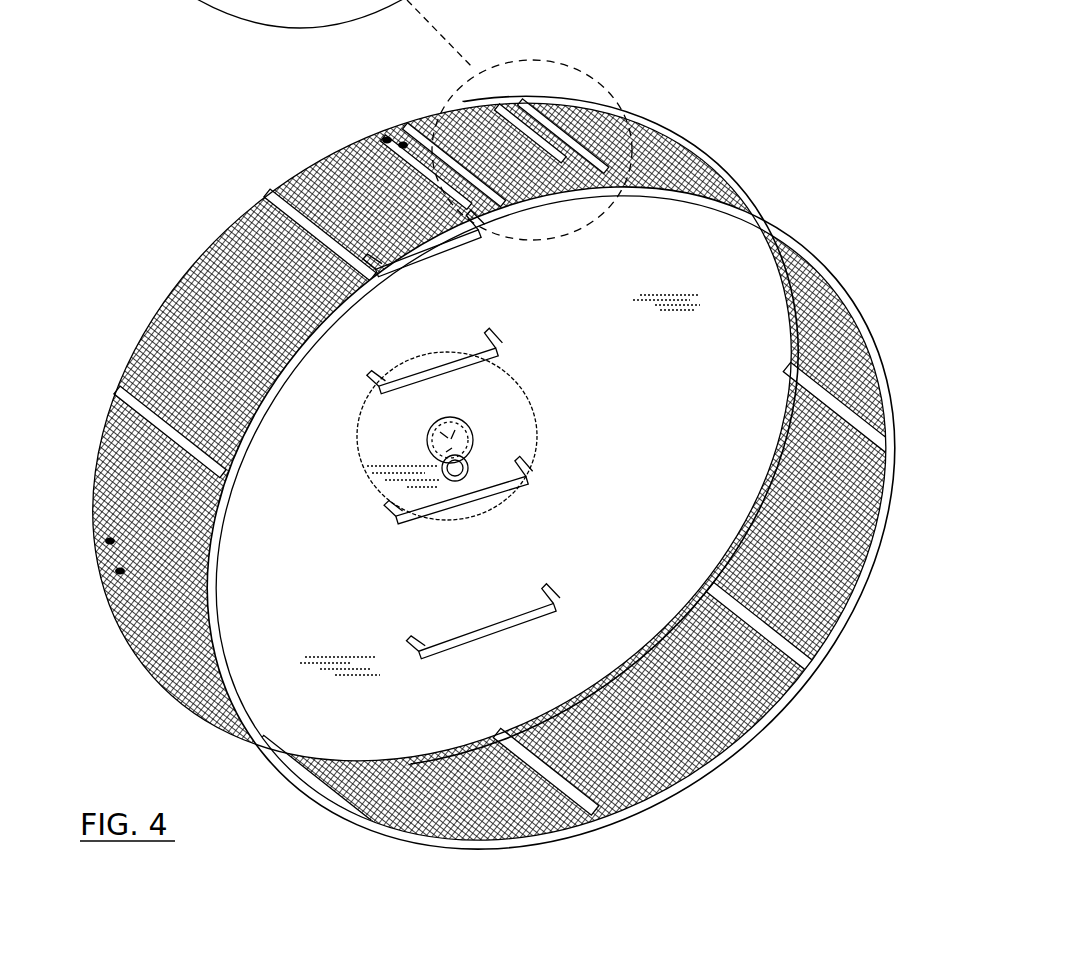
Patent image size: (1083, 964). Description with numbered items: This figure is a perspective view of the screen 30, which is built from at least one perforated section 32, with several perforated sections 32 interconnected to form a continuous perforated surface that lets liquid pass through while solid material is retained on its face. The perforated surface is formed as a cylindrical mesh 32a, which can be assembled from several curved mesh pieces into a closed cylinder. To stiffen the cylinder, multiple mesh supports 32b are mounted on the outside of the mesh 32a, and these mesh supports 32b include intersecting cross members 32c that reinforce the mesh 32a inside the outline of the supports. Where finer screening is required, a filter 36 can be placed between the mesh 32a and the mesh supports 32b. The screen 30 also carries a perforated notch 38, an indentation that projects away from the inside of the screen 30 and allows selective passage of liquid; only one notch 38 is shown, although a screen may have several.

The screen 30 is at (541, 482).
The perforated section 32 is at (204, 248).
The cylindrical mesh 32a is at (707, 590).
The mesh supports 32b is at (348, 142).
The intersecting cross members 32c is at (401, 140).
The filter 36 is at (217, 636).
The perforated notch 38 is at (592, 108).